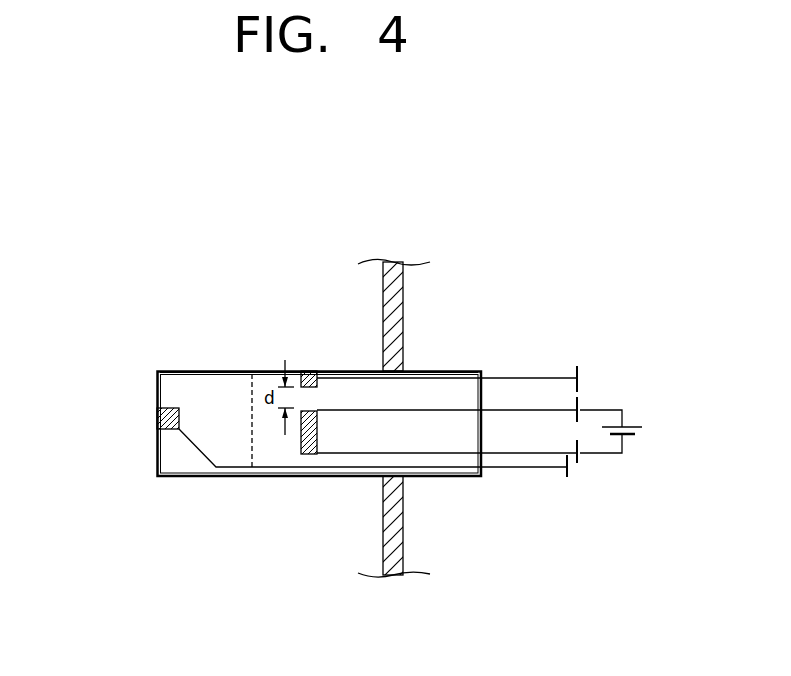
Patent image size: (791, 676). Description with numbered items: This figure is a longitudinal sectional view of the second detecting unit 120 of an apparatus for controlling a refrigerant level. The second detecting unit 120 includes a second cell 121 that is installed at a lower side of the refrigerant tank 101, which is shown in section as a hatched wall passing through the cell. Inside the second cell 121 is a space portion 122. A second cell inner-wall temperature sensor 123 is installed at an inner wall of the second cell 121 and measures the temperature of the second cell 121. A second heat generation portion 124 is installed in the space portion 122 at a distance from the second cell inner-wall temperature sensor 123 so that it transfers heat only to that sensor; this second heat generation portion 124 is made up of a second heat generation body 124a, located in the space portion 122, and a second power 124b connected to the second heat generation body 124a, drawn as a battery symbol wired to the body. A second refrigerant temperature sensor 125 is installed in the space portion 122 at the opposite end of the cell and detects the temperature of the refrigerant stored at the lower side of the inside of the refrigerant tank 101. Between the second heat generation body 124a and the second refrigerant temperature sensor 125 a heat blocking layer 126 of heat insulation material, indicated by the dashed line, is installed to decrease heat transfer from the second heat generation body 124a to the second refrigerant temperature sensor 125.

The refrigerant tank 101 is at (412, 289).
The second detecting unit 120 is at (133, 350).
The second cell 121 is at (228, 375).
The space portion 122 is at (198, 380).
The second cell inner-wall temperature sensor 123 is at (307, 371).
The second heat generation portion 124 is at (482, 500).
The second heat generation body 124a is at (317, 422).
The second power 124b is at (625, 436).
The second refrigerant temperature sensor 125 is at (155, 413).
The heat blocking layer 126 is at (252, 450).